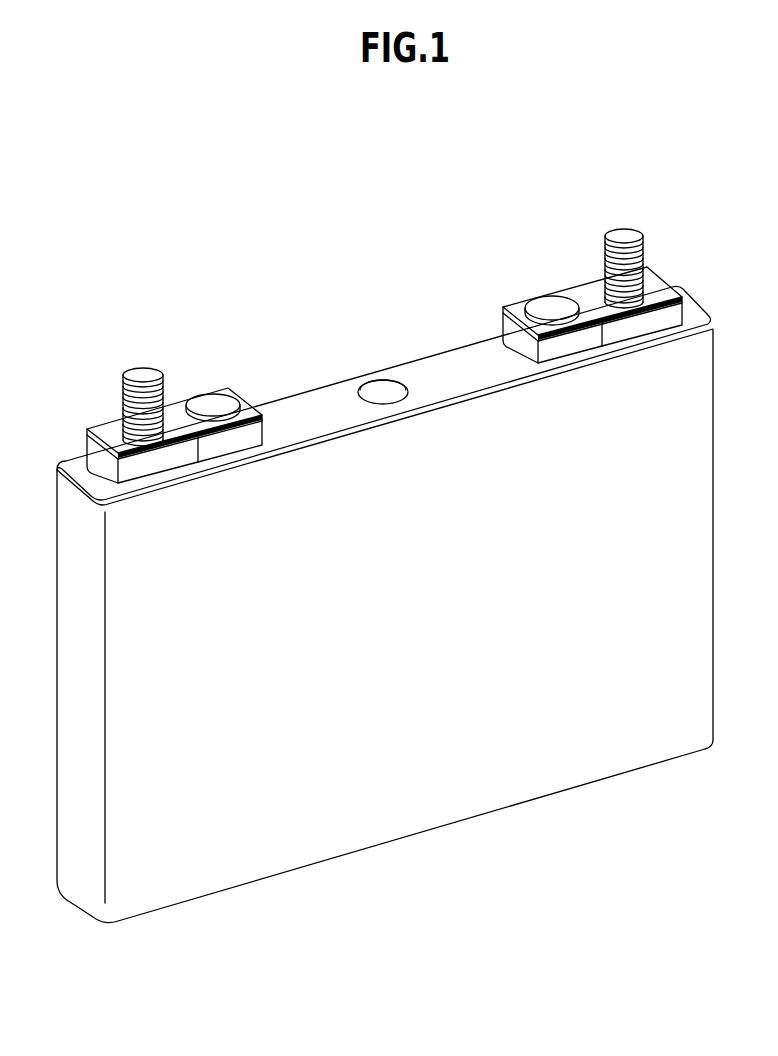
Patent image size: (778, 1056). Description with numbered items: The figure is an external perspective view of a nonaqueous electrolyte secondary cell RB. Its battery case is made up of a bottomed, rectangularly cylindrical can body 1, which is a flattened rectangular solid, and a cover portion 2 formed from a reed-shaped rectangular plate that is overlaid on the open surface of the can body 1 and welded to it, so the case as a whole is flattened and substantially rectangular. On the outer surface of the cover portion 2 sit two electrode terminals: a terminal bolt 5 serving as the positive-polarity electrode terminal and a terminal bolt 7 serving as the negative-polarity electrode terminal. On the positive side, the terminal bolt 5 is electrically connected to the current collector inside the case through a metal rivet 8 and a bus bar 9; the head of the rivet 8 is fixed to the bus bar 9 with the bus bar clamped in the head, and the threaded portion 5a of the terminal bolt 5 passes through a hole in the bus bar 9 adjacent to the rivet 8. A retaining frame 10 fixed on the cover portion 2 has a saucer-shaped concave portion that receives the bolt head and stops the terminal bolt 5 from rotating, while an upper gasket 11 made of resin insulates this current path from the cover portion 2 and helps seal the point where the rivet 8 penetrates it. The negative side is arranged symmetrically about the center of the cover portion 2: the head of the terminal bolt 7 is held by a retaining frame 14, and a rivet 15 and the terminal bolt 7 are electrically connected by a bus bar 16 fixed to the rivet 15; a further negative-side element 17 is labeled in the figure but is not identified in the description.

The nonaqueous electrolyte secondary cell RB is at (287, 272).
The can body 1 is at (616, 777).
The cover portion 2 is at (398, 358).
The terminal bolt 5 is at (168, 384).
The threaded portion 5a is at (150, 366).
The terminal bolt 7 is at (623, 228).
The rivet 8 is at (204, 400).
The bus bar 9 is at (107, 421).
The retaining frame 10 is at (148, 470).
The upper gasket 11 is at (232, 450).
The retaining frame 14 is at (647, 328).
The rivet 15 is at (541, 296).
The bus bar 16 is at (580, 292).
The insulating block portion 17 is at (568, 353).